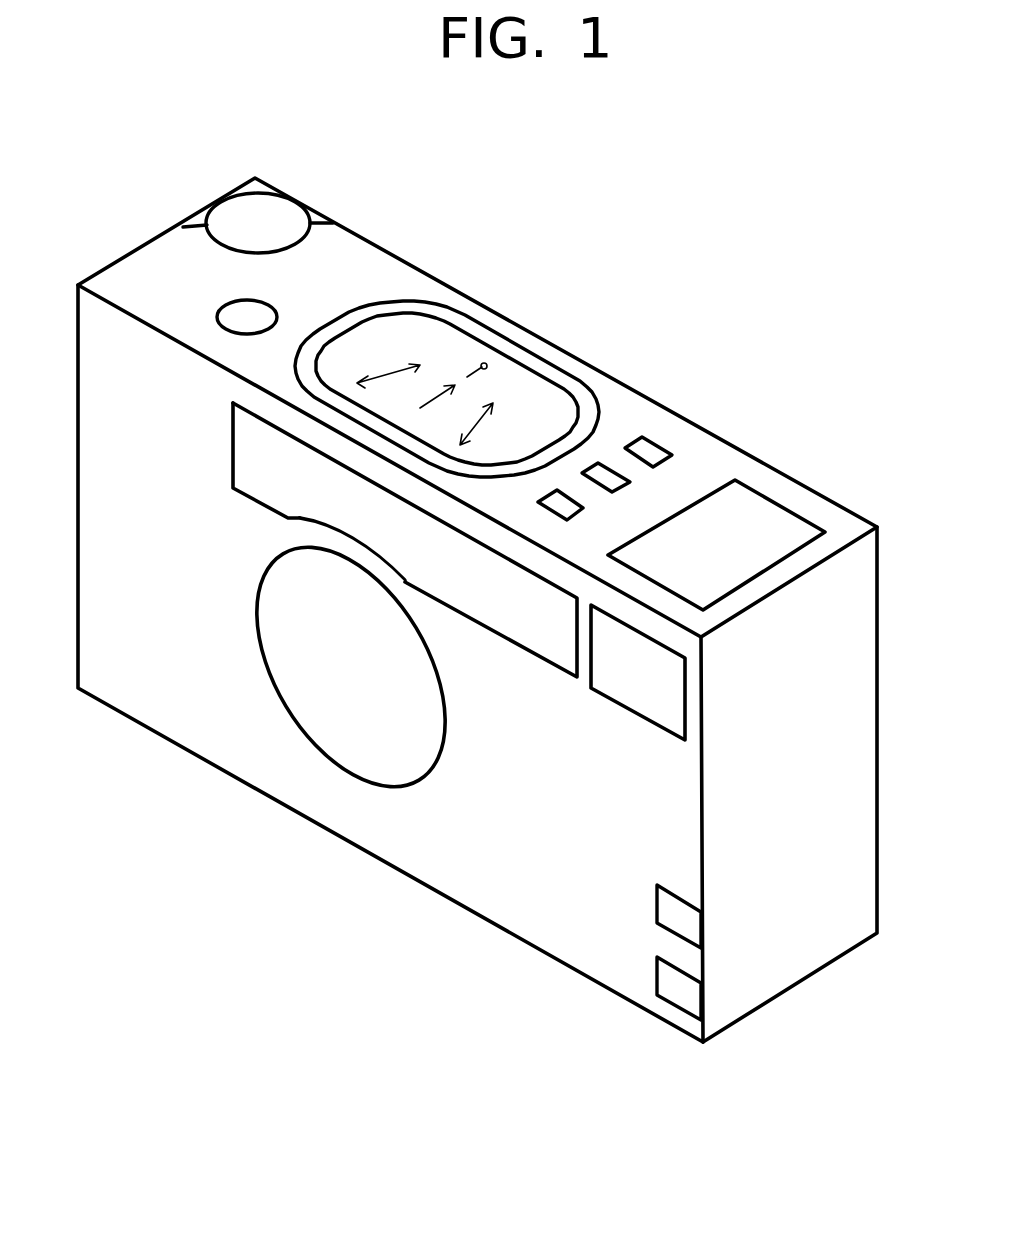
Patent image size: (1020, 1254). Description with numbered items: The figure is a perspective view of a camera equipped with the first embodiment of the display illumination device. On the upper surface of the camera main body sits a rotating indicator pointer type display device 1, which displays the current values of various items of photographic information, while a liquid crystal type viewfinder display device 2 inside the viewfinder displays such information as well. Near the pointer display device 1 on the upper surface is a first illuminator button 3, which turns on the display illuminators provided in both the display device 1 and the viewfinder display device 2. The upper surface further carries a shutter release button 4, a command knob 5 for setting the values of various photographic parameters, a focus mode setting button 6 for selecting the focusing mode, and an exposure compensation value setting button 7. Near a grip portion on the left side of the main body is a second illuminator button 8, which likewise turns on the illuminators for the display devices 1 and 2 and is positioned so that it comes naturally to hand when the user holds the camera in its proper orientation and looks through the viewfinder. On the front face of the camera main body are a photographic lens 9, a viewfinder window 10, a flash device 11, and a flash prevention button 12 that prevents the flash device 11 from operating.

The rotating indicator pointer type display device 1 is at (533, 407).
The liquid crystal type viewfinder display device 2 is at (760, 538).
The first illuminator button 3 is at (607, 478).
The shutter release button 4 is at (260, 313).
The command knob 5 is at (283, 222).
The focus mode setting button 6 is at (653, 448).
The exposure compensation value setting button 7 is at (567, 510).
The second illuminator button 8 is at (675, 917).
The photographic lens 9 is at (315, 723).
The viewfinder window 10 is at (522, 640).
The flash device 11 is at (652, 677).
The flash prevention button 12 is at (685, 993).